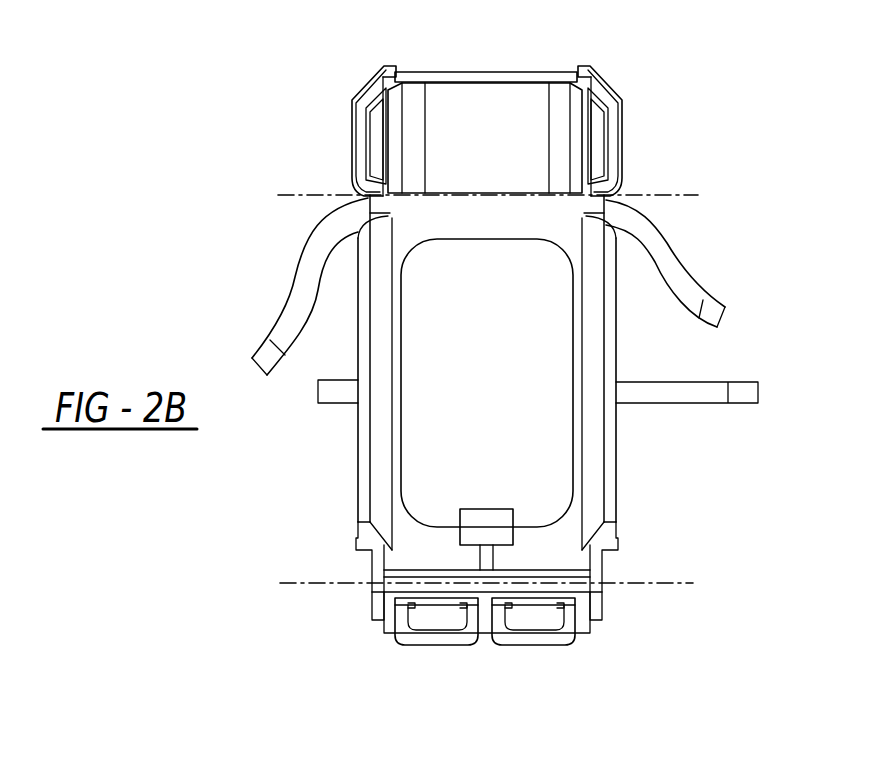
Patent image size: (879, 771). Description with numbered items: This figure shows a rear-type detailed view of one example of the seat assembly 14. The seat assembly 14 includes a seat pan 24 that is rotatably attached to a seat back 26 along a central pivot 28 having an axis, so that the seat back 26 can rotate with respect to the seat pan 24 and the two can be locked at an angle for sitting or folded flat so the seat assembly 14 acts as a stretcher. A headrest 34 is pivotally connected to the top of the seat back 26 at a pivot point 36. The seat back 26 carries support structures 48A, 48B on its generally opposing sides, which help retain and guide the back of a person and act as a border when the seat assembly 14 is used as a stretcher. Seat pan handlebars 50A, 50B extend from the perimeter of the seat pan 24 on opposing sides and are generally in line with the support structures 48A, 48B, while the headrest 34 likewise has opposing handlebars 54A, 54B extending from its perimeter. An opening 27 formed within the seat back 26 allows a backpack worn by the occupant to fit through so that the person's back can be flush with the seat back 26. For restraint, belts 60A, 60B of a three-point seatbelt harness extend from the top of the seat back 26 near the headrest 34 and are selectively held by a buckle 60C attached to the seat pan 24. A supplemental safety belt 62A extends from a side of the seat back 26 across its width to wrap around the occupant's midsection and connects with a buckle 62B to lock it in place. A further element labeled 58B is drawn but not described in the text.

The seat assembly 14 is at (712, 192).
The seat pan 24 is at (567, 577).
The seat back 26 is at (562, 533).
The opening 27 is at (575, 292).
The central pivot 28 is at (303, 586).
The headrest 34 is at (477, 117).
The pivot point 36 is at (297, 195).
The support structure 48A is at (358, 318).
The support structure 48B is at (607, 362).
The seat pan handlebar 50A is at (370, 560).
The seat pan handlebar 50B is at (613, 553).
The headrest handlebar 54A is at (355, 124).
The headrest handlebar 54B is at (620, 133).
The connector 58B is at (196, 0).
The belt 60A is at (305, 272).
The belt 60B is at (677, 280).
The buckle 60C is at (480, 520).
The supplemental safety belt 62A is at (700, 392).
The buckle 62B is at (330, 392).